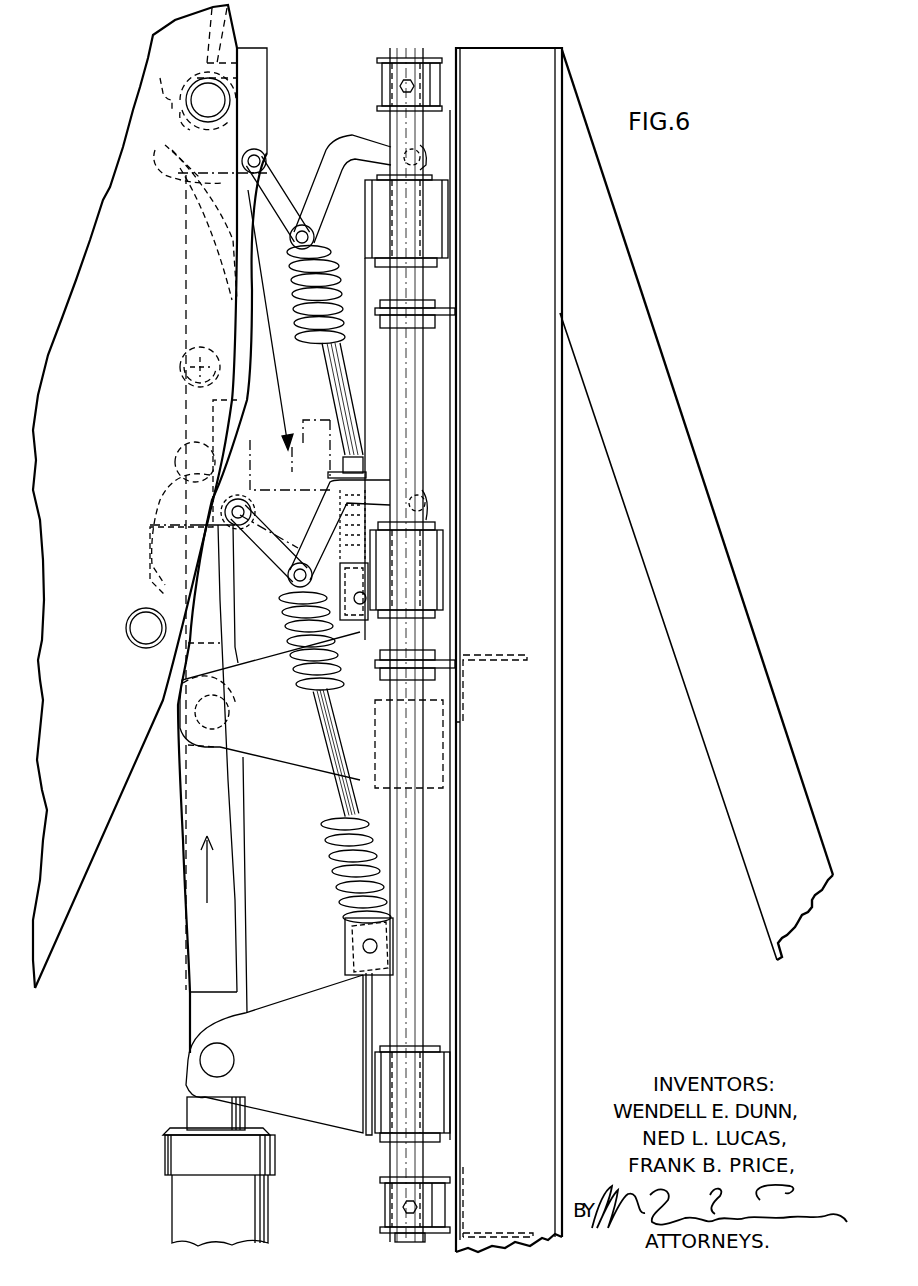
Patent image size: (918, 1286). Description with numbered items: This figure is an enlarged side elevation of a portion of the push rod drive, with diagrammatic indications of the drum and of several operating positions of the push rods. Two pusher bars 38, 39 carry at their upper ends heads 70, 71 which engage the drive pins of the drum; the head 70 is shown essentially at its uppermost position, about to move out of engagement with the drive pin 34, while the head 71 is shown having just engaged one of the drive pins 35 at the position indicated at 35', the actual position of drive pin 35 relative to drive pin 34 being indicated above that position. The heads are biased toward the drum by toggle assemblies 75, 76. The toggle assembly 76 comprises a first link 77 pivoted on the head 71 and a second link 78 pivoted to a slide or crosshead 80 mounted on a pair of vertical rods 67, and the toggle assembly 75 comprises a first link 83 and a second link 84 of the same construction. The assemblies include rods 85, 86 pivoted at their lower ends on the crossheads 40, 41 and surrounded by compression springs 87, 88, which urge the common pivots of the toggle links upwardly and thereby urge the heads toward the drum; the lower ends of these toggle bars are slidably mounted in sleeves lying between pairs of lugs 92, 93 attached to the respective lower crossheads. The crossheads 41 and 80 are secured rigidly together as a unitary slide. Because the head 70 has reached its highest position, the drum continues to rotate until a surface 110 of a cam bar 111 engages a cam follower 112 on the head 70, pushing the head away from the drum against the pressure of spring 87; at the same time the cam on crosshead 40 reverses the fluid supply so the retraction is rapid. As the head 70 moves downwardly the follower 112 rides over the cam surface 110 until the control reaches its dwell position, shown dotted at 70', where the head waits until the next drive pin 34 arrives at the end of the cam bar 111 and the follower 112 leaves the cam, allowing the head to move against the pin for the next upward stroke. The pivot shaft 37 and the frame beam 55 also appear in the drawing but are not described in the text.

The drive pin 34 is at (200, 88).
The drive pin 35 is at (200, 348).
The drive pin position 35' is at (171, 453).
The pivot shaft 37 is at (262, 1210).
The pusher bar 38 is at (233, 612).
The pusher bar 39 is at (200, 966).
The crosshead 40 is at (282, 724).
The crosshead 41 is at (312, 1062).
The frame beam 55 is at (550, 74).
The vertical rods 67 is at (416, 453).
The head 70 is at (273, 100).
The dwell position of head 70' is at (290, 442).
The head 71 is at (172, 495).
The toggle assembly 75 is at (316, 168).
The toggle assembly 76 is at (303, 534).
The first link 77 is at (283, 535).
The second link 78 is at (317, 525).
The slide or crosshead 80 is at (434, 560).
The first link 83 is at (280, 187).
The second link 84 is at (350, 137).
The rod 85 is at (322, 375).
The rod 86 is at (322, 745).
The compression spring 87 is at (333, 272).
The compression spring 88 is at (290, 662).
The lugs 92 is at (355, 622).
The lugs 93 is at (347, 955).
The cam surface 110 is at (185, 200).
The cam bar 111 is at (247, 372).
The cam follower 112 is at (170, 95).